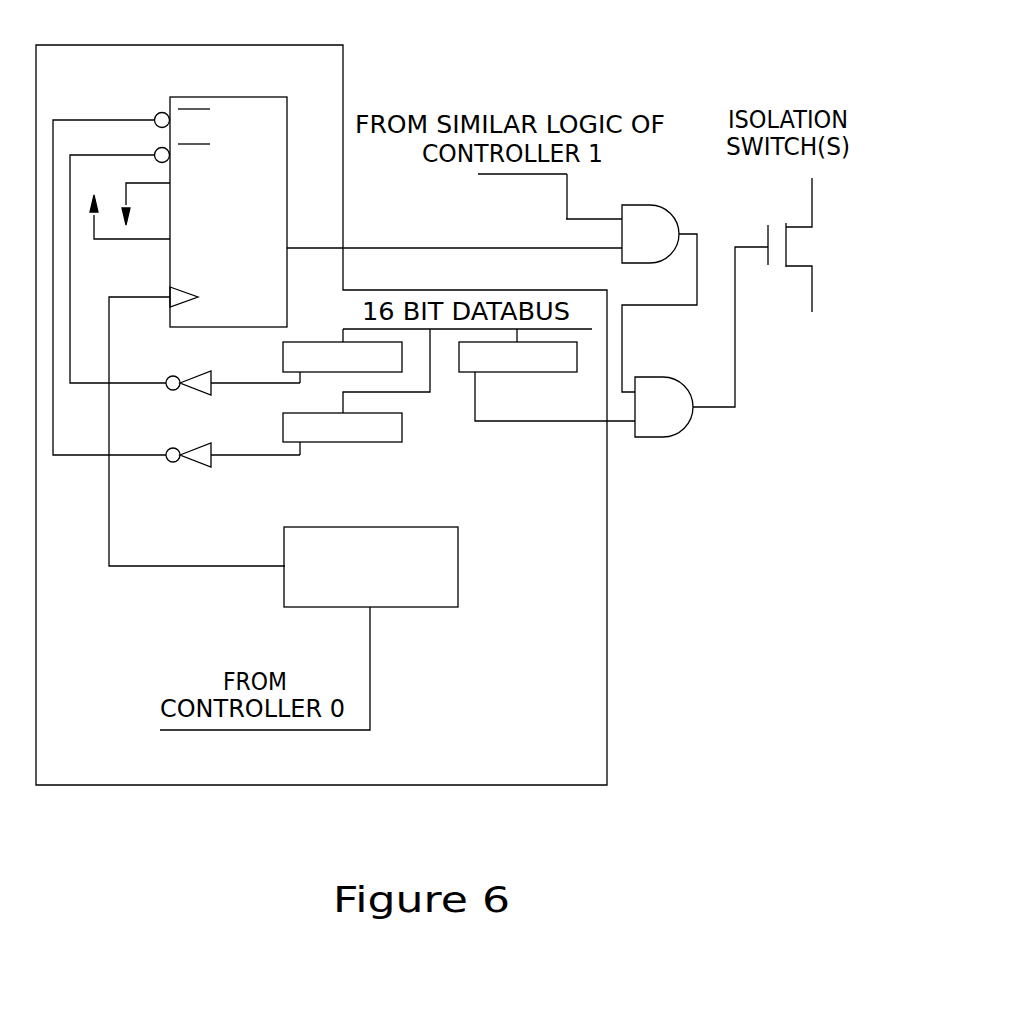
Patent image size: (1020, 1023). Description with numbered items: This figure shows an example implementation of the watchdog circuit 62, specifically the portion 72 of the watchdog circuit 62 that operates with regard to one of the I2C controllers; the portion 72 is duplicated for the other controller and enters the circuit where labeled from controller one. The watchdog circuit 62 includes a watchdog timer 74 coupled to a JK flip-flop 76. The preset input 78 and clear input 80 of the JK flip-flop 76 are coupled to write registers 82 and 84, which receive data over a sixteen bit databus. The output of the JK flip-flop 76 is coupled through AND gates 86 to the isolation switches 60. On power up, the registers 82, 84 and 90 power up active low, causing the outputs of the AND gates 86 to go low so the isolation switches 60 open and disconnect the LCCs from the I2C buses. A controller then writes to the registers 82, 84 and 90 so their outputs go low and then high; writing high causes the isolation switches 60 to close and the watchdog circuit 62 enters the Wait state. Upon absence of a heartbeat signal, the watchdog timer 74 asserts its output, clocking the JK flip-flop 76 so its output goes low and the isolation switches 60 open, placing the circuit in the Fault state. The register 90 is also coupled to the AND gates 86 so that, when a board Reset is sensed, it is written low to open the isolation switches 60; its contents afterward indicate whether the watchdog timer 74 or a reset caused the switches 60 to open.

The isolation switches 60 is at (780, 284).
The watchdog circuit 62 is at (692, 42).
The portion of the watchdog circuit 72 is at (186, 785).
The watchdog timer 74 is at (405, 607).
The JK flip-flop 76 is at (217, 97).
The preset input 78 is at (156, 114).
The clear input 80 is at (156, 149).
The write register 82 is at (295, 342).
The write register 84 is at (327, 442).
The AND gates 86 is at (635, 205).
The register 90 is at (510, 372).